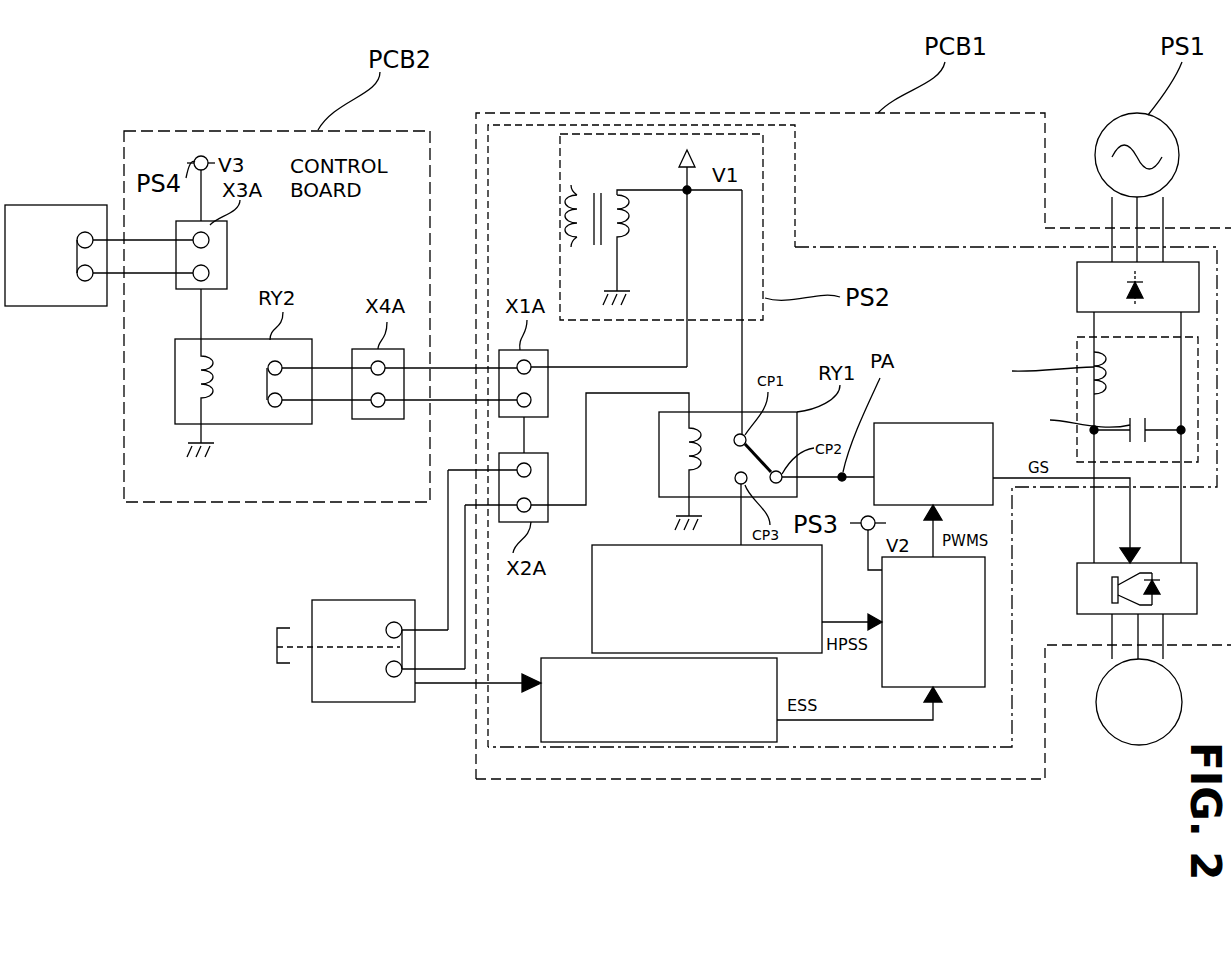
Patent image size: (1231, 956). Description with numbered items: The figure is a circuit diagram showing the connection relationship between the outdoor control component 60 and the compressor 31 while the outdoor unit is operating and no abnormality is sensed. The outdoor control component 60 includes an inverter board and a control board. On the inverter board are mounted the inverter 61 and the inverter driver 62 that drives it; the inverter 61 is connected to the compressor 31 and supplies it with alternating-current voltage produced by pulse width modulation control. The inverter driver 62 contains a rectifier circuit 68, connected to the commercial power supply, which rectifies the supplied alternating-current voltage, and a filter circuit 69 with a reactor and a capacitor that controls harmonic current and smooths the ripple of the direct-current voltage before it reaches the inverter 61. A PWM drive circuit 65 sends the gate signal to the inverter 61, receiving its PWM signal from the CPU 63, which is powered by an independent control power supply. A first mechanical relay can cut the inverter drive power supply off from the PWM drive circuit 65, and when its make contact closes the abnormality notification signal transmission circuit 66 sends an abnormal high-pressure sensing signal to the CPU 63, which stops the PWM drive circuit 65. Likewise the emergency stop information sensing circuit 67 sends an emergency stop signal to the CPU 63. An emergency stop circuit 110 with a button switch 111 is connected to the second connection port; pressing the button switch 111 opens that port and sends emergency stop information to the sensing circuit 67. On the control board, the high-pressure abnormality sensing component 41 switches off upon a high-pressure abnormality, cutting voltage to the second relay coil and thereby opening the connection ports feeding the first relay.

The high-pressure abnormality sensing component 41 is at (60, 205).
The outdoor control component 60 is at (462, 102).
The inverter driver 62 is at (797, 190).
The PWM drive circuit 65 is at (880, 423).
The abnormality notification signal transmission circuit 66 is at (592, 572).
The emergency stop information sensing circuit 67 is at (565, 658).
The rectifier circuit 68 is at (1077, 287).
The filter circuit 69 is at (1077, 338).
The inverter 61 is at (1077, 590).
The central processing unit (CPU) 63 is at (987, 682).
The compressor 31 is at (1118, 742).
The emergency stop circuit 110 is at (312, 696).
The button switch 111 is at (277, 633).